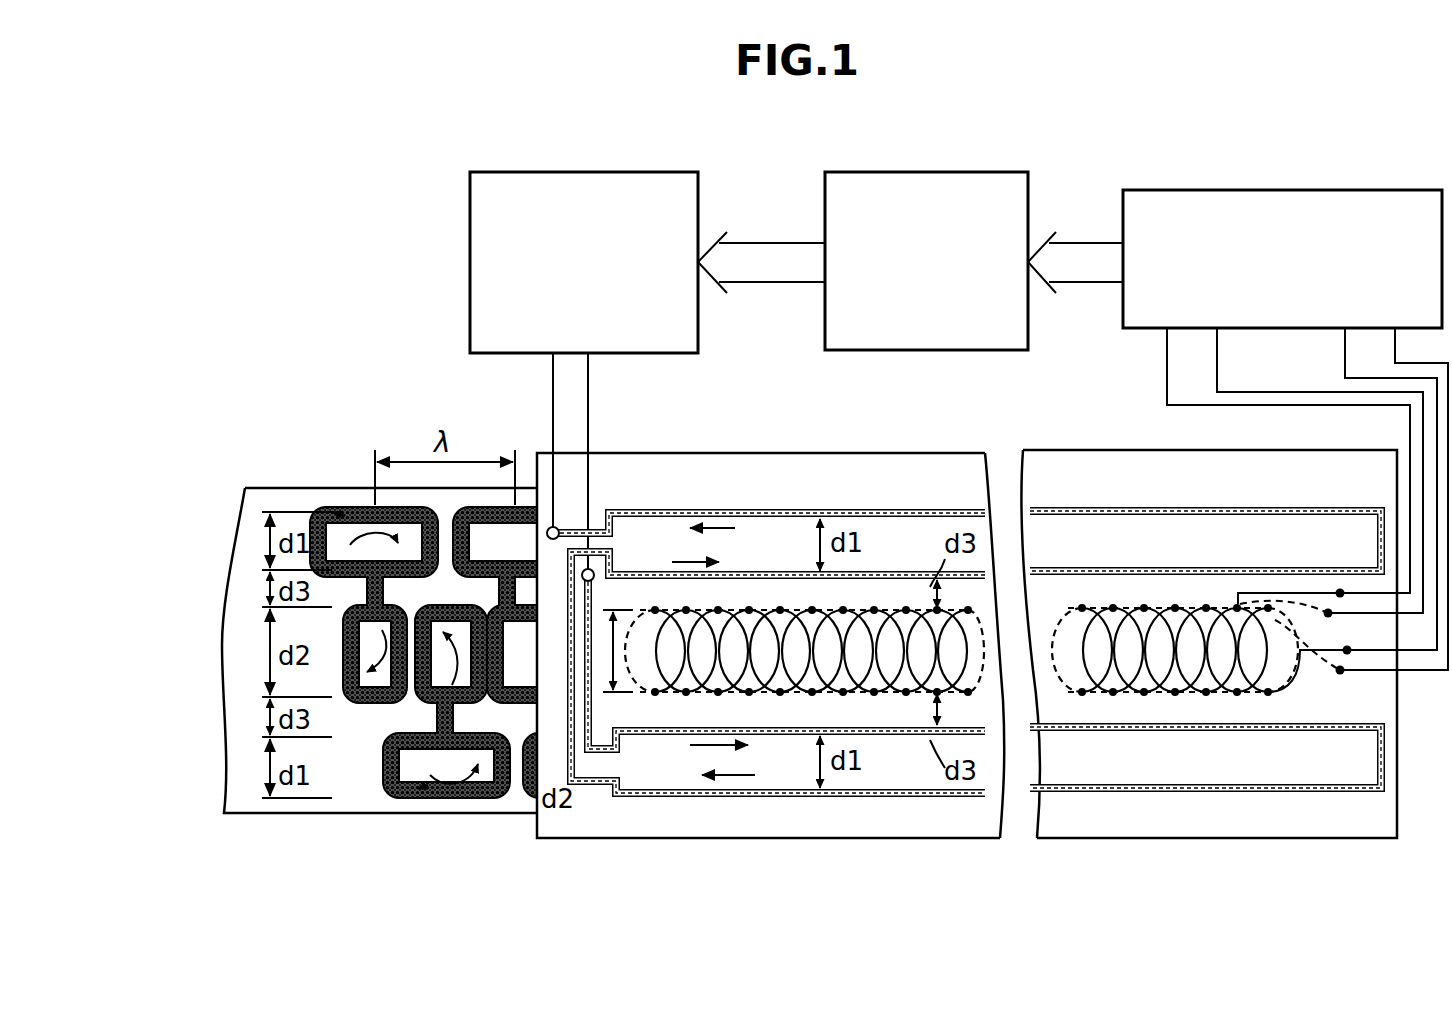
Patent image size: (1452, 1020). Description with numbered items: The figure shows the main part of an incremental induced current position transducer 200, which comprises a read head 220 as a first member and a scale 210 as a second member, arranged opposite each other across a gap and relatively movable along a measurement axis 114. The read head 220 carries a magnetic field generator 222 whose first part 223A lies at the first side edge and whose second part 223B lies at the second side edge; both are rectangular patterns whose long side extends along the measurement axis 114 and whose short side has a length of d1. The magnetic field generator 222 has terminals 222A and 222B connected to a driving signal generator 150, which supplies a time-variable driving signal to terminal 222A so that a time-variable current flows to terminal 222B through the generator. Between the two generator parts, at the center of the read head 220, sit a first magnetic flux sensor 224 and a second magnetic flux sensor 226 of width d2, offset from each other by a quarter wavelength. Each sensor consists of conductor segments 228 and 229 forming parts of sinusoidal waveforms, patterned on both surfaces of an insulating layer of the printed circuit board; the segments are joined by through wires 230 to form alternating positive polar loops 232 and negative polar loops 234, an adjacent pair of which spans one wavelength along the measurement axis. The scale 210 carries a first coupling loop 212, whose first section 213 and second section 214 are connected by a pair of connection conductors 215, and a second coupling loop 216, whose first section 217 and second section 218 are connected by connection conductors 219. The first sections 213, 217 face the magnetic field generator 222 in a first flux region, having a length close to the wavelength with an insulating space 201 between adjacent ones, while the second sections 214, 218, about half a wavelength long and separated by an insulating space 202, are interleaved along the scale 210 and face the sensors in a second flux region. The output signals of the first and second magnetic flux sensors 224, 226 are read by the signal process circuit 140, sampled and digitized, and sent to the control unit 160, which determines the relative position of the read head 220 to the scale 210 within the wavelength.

The measurement axis 114 is at (983, 433).
The signal process circuit 140 is at (1285, 190).
The driving signal generator 150 is at (642, 172).
The control unit 160 is at (930, 172).
The position transducer 200 is at (312, 380).
The insulating space 201 is at (448, 507).
The insulating space 202 is at (411, 506).
The scale 210 is at (245, 813).
The first coupling loop 212 is at (330, 510).
The first section 213 is at (363, 508).
The second section 214 is at (353, 678).
The connection conductors 215 is at (355, 590).
The second coupling loop 216 is at (435, 797).
The first section 217 is at (405, 786).
The second section 218 is at (435, 705).
The connection conductors 219 is at (440, 685).
The read head 220 is at (808, 838).
The magnetic field generator 222 is at (1230, 793).
The terminal 222A is at (589, 568).
The terminal 222B is at (553, 526).
The first part of the magnetic field generator 223A is at (1087, 530).
The second part of the magnetic field generator 223B is at (1103, 760).
The first magnetic flux sensor 224 is at (1292, 600).
The second magnetic flux sensor 226 is at (1300, 655).
The conductor segment 228 is at (650, 608).
The conductor segment 229 is at (642, 690).
The through wires 230 is at (697, 513).
The positive polar loop 232 is at (660, 608).
The negative polar loop 234 is at (763, 608).